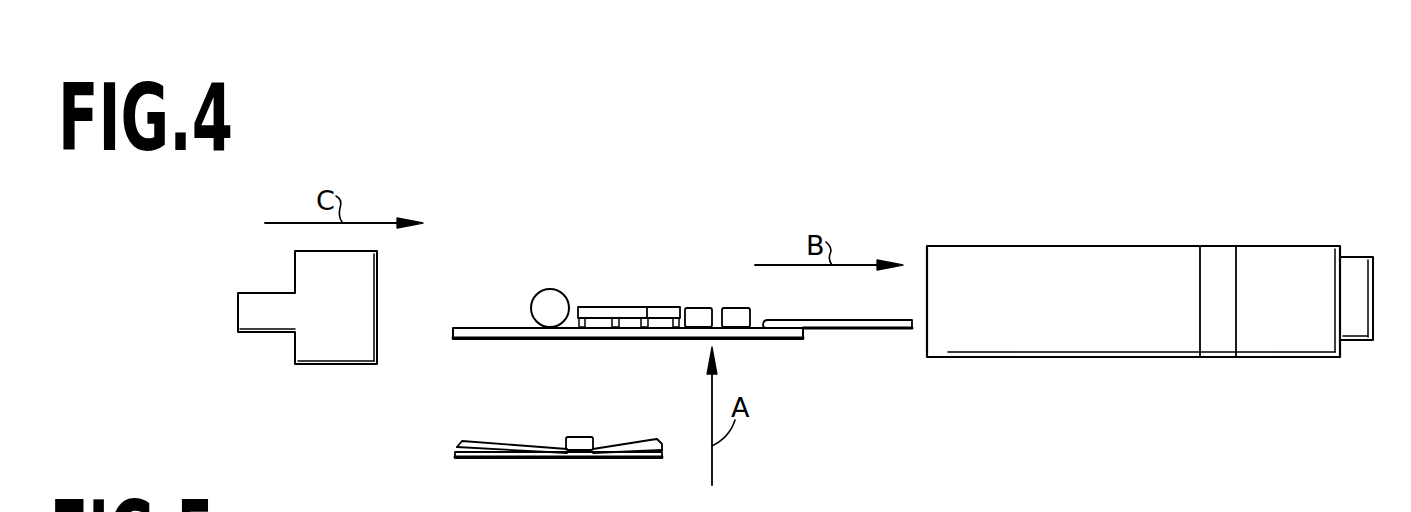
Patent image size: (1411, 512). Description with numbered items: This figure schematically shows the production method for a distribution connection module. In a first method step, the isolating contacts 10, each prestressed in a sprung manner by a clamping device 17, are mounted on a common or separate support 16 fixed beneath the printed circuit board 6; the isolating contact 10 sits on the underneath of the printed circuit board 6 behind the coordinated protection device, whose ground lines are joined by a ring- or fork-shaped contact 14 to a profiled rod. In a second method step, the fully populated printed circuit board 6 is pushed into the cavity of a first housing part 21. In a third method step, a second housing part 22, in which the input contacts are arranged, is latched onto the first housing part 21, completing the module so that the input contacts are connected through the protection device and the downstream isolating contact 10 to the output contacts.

The printed circuit board 6 is at (513, 332).
The isolating contact 10 is at (507, 440).
The contact 14 is at (848, 330).
The support 16 is at (480, 457).
The clamping device 17 is at (586, 438).
The first housing part 21 is at (1070, 340).
The second housing part 22 is at (326, 344).